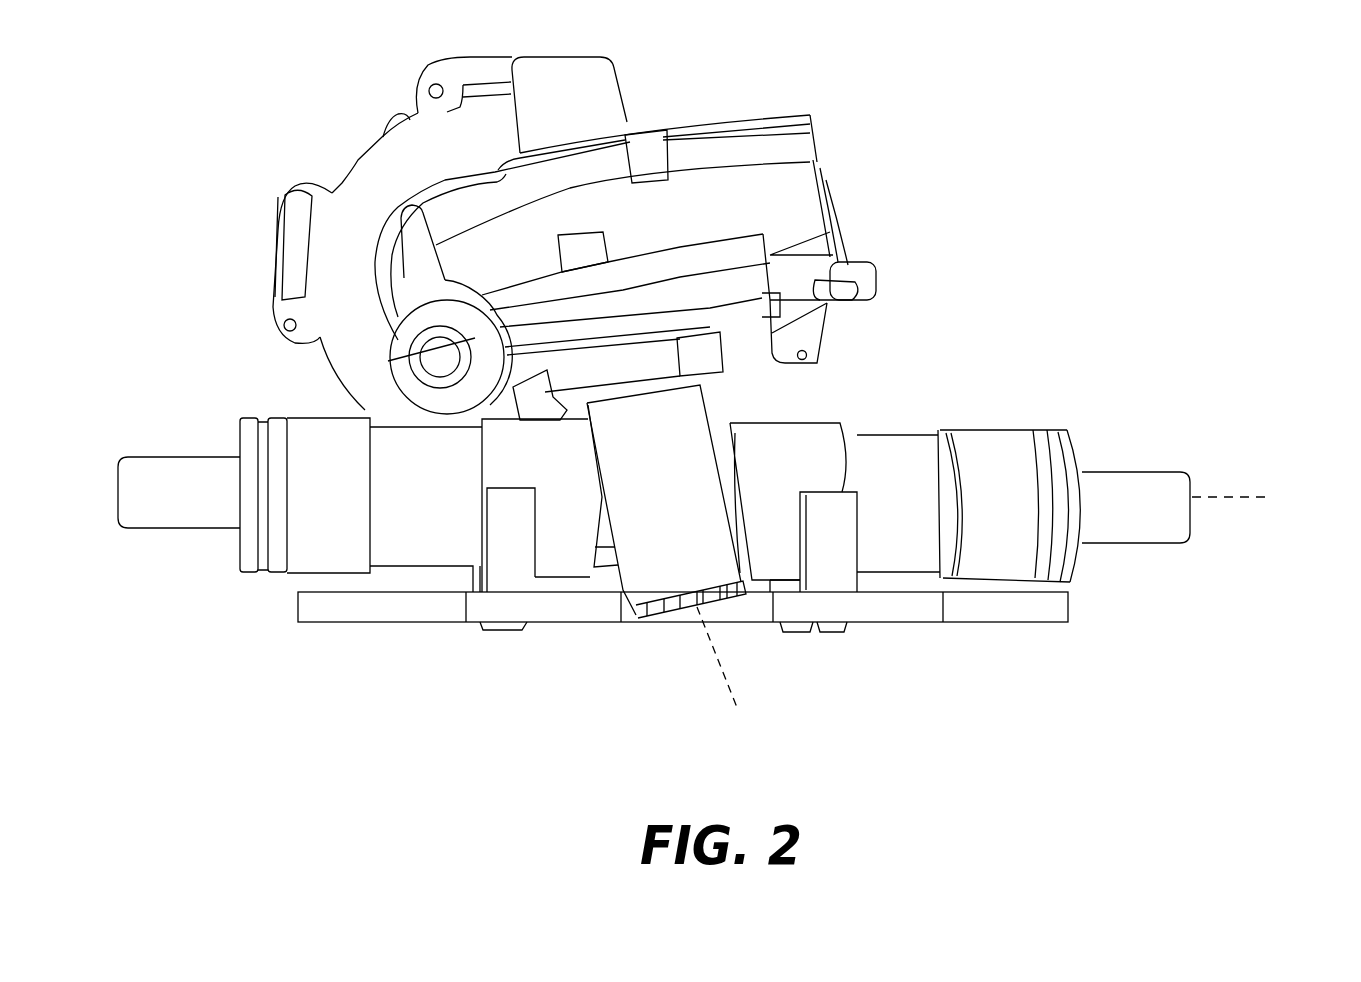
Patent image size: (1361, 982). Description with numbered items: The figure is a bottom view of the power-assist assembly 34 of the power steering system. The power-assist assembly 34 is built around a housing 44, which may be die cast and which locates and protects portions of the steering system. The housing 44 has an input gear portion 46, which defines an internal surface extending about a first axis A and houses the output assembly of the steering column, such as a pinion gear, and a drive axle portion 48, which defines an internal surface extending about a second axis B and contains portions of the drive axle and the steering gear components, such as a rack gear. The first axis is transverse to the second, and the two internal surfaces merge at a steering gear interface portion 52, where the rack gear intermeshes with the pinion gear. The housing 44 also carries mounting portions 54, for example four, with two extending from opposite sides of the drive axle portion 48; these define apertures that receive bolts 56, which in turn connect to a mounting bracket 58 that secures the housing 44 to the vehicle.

The power-assist assembly 34 is at (1137, 120).
The housing 44 is at (836, 416).
The input gear portion 46 is at (635, 597).
The drive axle portion 48 is at (833, 478).
The steering gear interface portion 52 is at (583, 478).
The mounting portion 54 is at (498, 580).
The bolt 56 is at (830, 635).
The mounting bracket 58 is at (1037, 615).